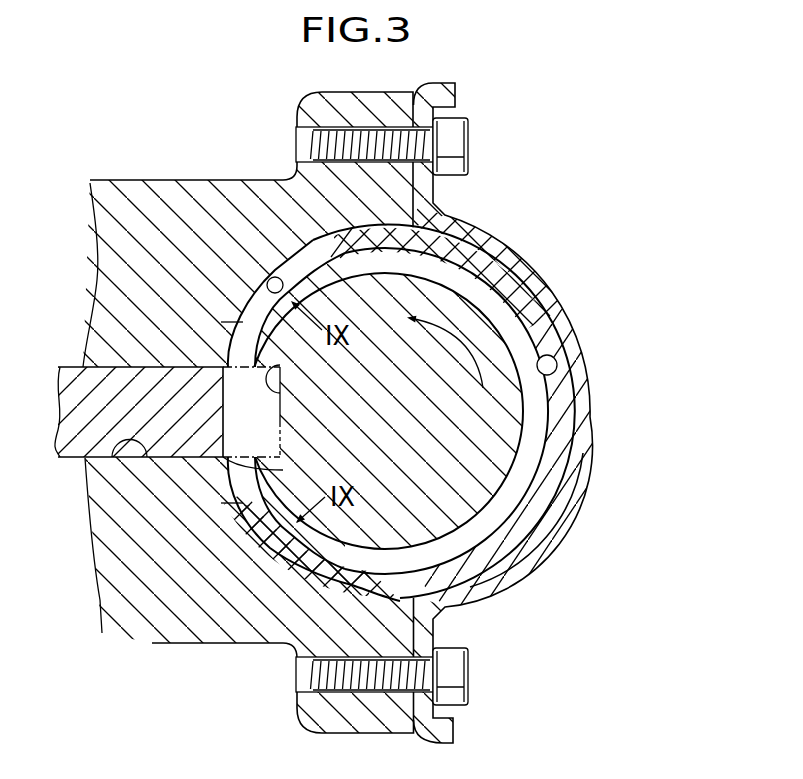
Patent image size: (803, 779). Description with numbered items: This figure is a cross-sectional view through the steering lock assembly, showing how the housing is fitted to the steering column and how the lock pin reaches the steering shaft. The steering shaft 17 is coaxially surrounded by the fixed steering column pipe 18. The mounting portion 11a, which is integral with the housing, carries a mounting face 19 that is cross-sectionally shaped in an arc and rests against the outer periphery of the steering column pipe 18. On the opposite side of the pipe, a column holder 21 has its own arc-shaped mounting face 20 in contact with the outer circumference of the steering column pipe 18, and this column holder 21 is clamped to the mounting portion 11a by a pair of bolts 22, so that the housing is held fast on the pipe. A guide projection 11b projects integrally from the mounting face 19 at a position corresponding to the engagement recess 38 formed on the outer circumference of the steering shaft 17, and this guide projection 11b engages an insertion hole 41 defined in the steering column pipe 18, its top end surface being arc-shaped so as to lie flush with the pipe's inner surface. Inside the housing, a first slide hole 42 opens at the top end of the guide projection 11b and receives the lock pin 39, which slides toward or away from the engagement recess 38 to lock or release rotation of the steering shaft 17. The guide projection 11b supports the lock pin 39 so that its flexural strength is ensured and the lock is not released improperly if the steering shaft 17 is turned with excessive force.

The mounting portion 11a is at (322, 105).
The guide projection 11b is at (283, 470).
The steering shaft 17 is at (427, 443).
The steering column pipe 18 is at (525, 305).
The mounting face 19 is at (253, 286).
The mounting face 20 is at (555, 378).
The column holder 21 is at (585, 422).
The bolts 22 is at (455, 141).
The engagement recess 38 is at (292, 399).
The lock pin 39 is at (205, 425).
The insertion hole 41 is at (231, 343).
The first slide hole 42 is at (100, 472).